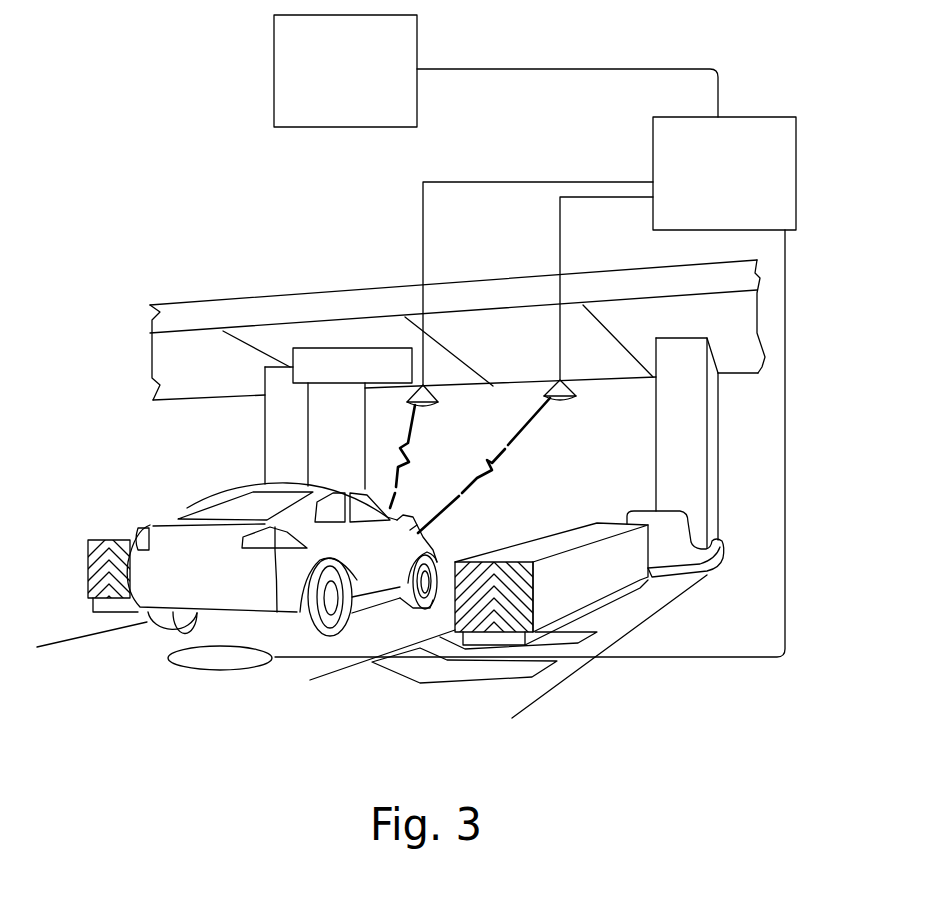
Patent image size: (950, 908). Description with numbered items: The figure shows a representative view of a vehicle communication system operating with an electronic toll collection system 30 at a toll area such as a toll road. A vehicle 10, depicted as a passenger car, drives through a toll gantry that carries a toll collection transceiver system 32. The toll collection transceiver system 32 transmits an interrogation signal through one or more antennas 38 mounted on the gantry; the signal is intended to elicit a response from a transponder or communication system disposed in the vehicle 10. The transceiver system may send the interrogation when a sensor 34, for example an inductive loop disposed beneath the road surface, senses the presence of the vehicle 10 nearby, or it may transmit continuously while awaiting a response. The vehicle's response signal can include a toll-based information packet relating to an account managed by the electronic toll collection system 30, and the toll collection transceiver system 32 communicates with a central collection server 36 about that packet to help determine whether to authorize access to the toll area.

The vehicle 10 is at (190, 502).
The electronic toll collection system 30 is at (795, 291).
The toll collection transceiver system 32 is at (797, 168).
The sensor 34 is at (197, 670).
The central collection server 36 is at (417, 39).
The antenna 38 is at (427, 405).